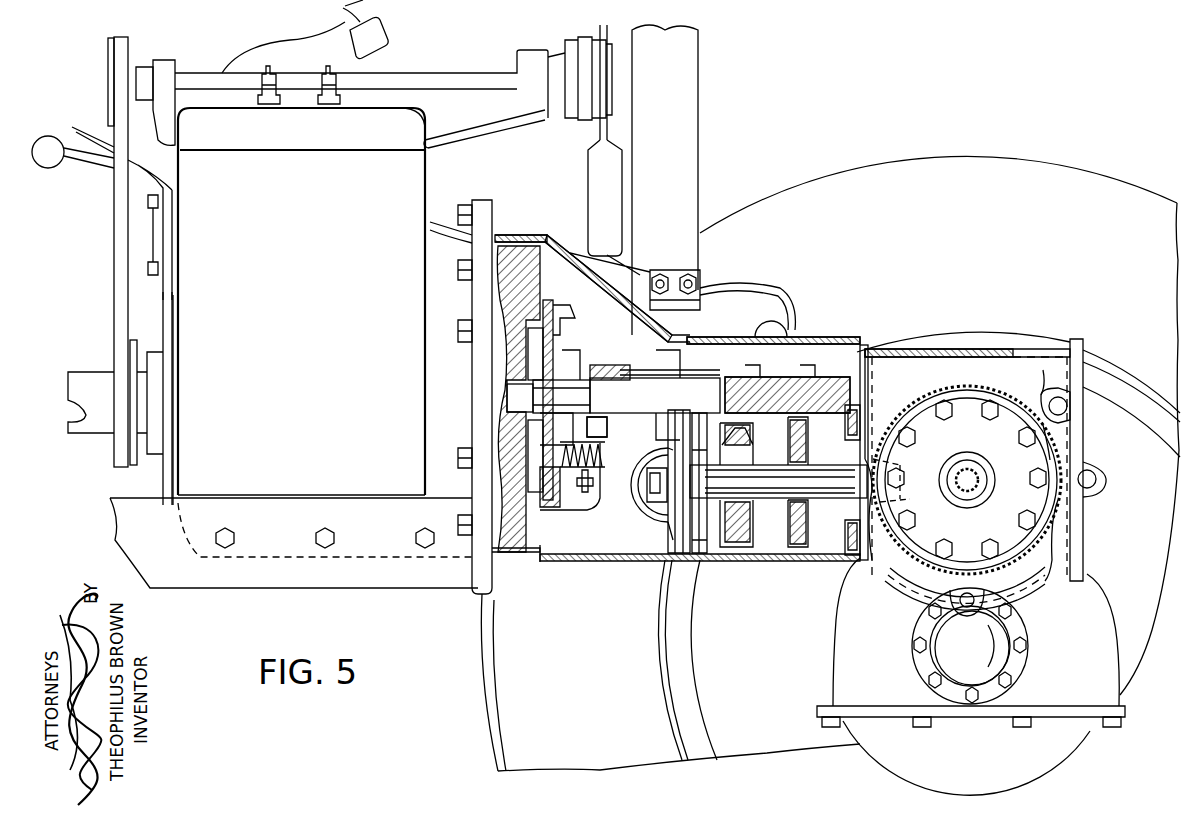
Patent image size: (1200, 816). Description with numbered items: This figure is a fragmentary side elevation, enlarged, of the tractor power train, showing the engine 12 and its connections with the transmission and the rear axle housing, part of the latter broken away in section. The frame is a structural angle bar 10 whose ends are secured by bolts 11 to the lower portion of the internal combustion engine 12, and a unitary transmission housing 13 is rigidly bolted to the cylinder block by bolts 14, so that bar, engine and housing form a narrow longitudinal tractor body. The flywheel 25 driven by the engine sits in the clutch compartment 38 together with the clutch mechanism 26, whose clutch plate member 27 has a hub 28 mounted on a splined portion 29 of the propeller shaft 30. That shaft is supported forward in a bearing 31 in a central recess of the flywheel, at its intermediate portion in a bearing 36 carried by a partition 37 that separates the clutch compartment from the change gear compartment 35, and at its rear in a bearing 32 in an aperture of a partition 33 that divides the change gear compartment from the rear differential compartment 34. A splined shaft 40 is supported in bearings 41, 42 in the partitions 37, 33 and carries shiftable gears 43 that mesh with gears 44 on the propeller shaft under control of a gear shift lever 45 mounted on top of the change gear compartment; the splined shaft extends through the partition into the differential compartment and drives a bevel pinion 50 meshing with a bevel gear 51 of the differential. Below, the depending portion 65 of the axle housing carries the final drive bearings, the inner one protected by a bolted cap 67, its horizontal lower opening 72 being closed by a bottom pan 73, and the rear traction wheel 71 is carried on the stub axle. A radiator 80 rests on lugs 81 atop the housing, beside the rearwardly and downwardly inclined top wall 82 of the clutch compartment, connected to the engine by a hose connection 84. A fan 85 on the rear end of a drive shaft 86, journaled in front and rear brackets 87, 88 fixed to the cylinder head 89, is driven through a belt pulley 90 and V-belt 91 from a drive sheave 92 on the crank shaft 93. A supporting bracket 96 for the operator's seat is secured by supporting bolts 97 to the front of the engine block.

The structural angle bar 10 is at (176, 588).
The bolts 11 is at (418, 535).
The internal combustion engine 12 is at (302, 298).
The unitary transmission housing 13 is at (635, 568).
The bolts 14 is at (462, 332).
The flywheel 25 is at (527, 552).
The clutch mechanism 26 is at (589, 498).
The clutch plate member 27 is at (552, 338).
The hub 28 is at (570, 372).
The splined portion 29 is at (600, 374).
The propeller shaft 30 is at (630, 414).
The bearing 31 is at (507, 410).
The bearing 32 is at (868, 350).
The partition 33 is at (862, 558).
The rear differential compartment 34 is at (935, 348).
The change gear compartment 35 is at (826, 345).
The bearing 36 is at (670, 395).
The partition 37 is at (700, 556).
The clutch compartment 38 is at (605, 560).
The splined shaft 40 is at (773, 498).
The bearing 41 is at (654, 522).
The bearing 42 is at (812, 520).
The shiftable gears 43 is at (762, 548).
The gears 44 is at (835, 345).
The gear shift lever 45 is at (742, 285).
The bevel pinion 50 is at (900, 500).
The bevel gear 51 is at (1060, 450).
The depending portion 65 is at (1090, 640).
The cap 67 is at (938, 655).
The rear traction wheel 71 is at (1075, 168).
The opening 72 is at (1060, 708).
The bottom pan 73 is at (1078, 738).
The radiator 80 is at (680, 122).
The lugs 81 is at (670, 270).
The inclined top wall 82 is at (625, 286).
The hose connection 84 is at (372, 33).
The fan 85 is at (612, 196).
The drive shaft 86 is at (430, 78).
The front bracket 87 is at (165, 64).
The rear bracket 88 is at (490, 112).
The cylinder head 89 is at (410, 134).
The belt pulley 90 is at (108, 56).
The V-belt 91 is at (113, 262).
The drive sheave 92 is at (128, 346).
The crank shaft 93 is at (104, 425).
The supporting bracket 96 is at (75, 128).
The supporting bolts 97 is at (152, 262).